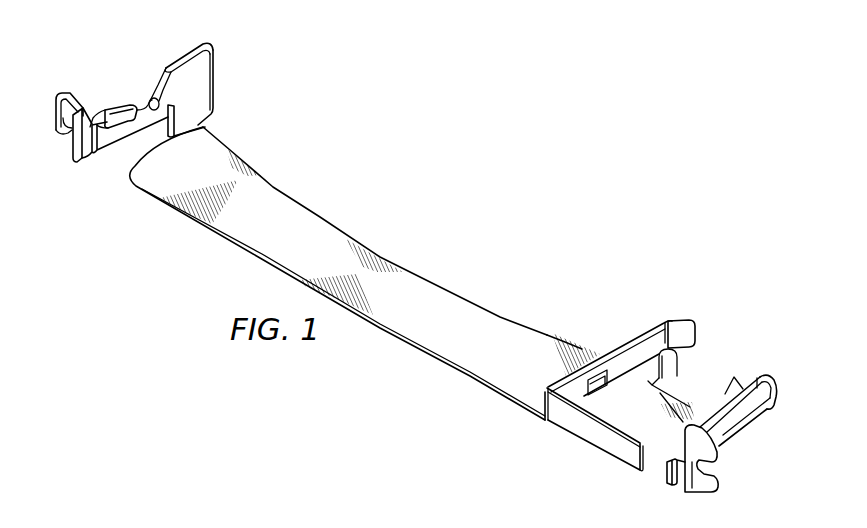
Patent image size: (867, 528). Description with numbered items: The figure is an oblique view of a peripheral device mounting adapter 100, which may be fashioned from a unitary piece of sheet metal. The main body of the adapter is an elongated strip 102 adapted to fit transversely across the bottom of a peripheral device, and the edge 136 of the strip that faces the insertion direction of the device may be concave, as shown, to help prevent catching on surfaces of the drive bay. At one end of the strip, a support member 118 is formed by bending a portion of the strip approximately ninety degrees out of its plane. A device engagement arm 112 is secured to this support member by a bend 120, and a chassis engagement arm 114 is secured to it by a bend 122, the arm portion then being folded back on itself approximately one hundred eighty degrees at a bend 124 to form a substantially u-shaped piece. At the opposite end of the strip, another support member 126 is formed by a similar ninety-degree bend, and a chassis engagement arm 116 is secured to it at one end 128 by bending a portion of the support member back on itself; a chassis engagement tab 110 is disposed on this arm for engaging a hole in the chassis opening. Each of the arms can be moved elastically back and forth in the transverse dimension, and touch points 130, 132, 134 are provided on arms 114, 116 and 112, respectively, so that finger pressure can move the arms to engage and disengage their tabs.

The peripheral device mounting adapter 100 is at (412, 218).
The strip 102 is at (273, 200).
The chassis engagement tab 110 is at (110, 108).
The device engagement arm 112 is at (640, 348).
The chassis engagement arm 114 is at (735, 432).
The chassis engagement arm 116 is at (108, 148).
The support member 118 is at (573, 428).
The bend securing arm 112 to support member 118 120 is at (541, 397).
The bend securing arm 114 to support member 118 122 is at (635, 462).
The bend of arm 114 124 is at (760, 377).
The support member 126 is at (207, 82).
The bend securing arm 116 to support member 126 128 is at (212, 43).
The touch point 130 is at (667, 475).
The touch point 132 is at (72, 148).
The touch point 134 is at (688, 332).
The edge of strip 136 is at (470, 302).